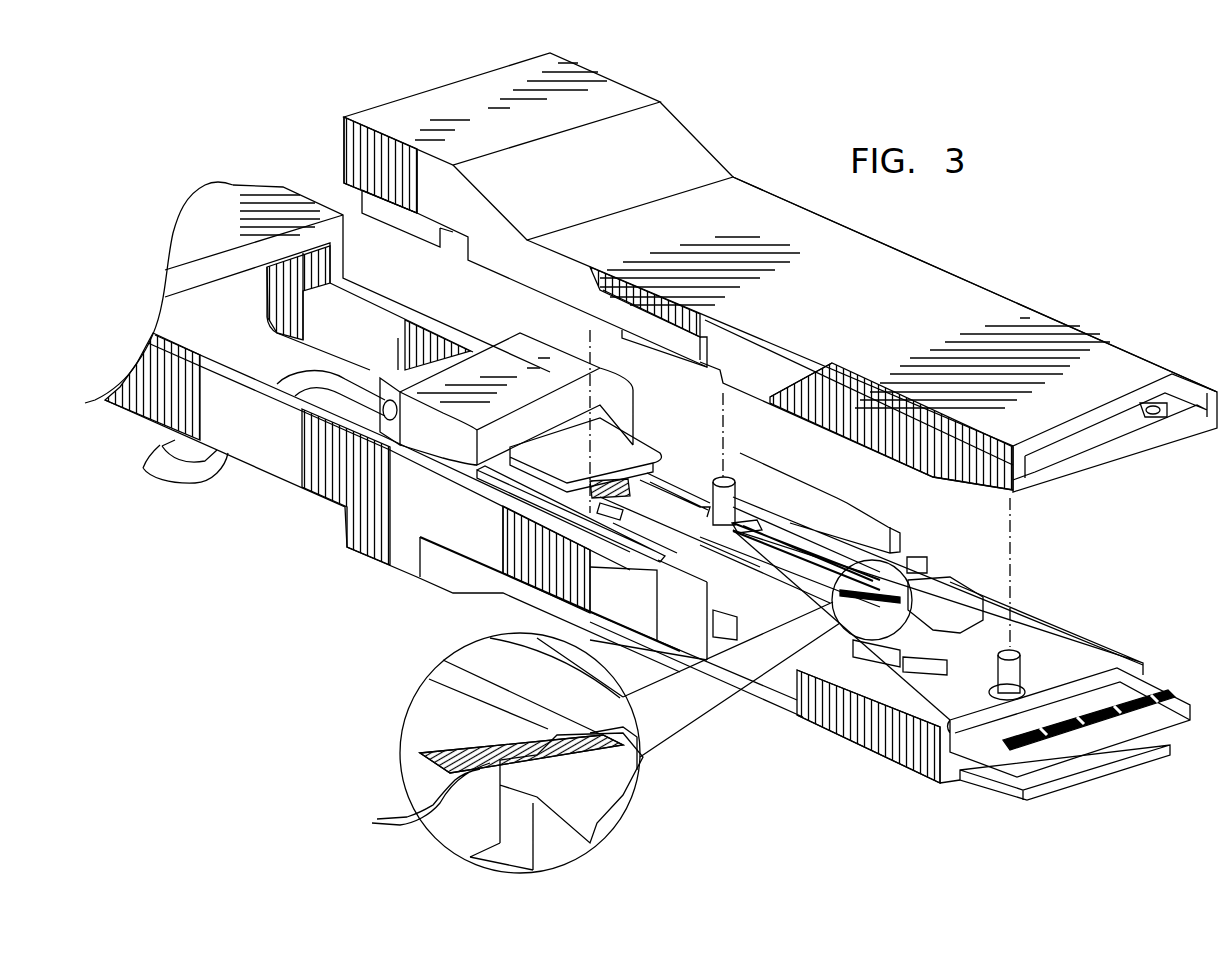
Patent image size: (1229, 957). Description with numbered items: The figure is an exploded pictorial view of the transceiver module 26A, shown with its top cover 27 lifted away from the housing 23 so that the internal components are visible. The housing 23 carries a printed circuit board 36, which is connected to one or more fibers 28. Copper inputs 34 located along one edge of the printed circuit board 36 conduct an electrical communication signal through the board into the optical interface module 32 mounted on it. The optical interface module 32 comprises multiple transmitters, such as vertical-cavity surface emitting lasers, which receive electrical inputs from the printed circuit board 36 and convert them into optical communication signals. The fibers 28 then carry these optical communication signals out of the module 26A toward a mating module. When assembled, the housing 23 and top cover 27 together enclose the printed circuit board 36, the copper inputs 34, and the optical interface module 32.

The housing 23 is at (307, 477).
The transceiver module 26A is at (1117, 251).
The top cover 27 is at (930, 295).
The fibers 28 is at (195, 478).
The optical interface module 32 is at (930, 613).
The copper inputs 34 is at (1163, 697).
The printed circuit board 36 is at (1040, 662).